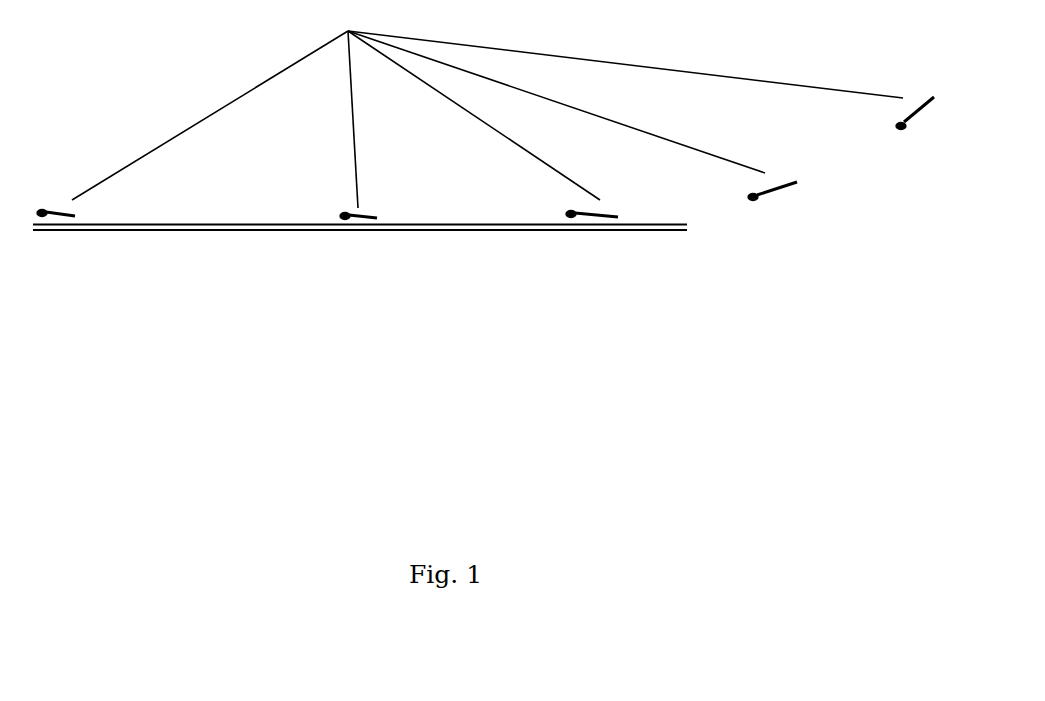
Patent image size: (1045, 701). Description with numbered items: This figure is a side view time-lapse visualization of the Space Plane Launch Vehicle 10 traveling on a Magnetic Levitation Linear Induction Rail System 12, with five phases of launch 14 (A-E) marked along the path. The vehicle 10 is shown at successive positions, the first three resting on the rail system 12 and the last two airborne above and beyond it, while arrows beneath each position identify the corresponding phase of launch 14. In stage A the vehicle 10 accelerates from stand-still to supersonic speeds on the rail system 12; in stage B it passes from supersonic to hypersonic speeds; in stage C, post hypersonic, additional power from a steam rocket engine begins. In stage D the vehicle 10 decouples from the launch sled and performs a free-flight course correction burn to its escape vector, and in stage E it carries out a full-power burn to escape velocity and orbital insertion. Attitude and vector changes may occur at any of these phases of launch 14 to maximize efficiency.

The space plane launch vehicle 10 is at (487, 107).
The magnetic levitation linear induction rail system 12 is at (208, 221).
The phases of launch 14 is at (53, 257).